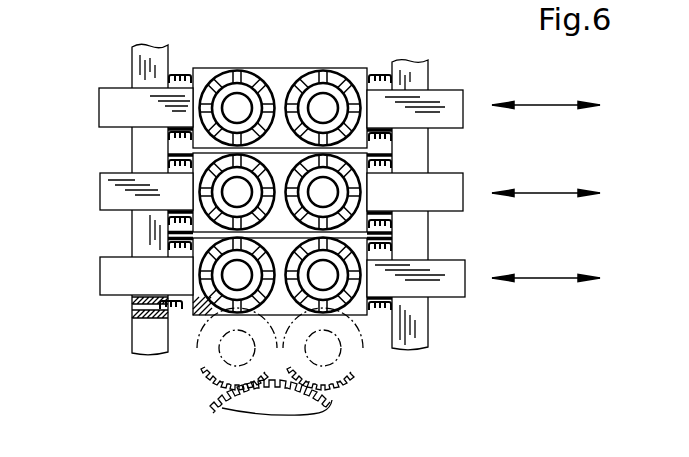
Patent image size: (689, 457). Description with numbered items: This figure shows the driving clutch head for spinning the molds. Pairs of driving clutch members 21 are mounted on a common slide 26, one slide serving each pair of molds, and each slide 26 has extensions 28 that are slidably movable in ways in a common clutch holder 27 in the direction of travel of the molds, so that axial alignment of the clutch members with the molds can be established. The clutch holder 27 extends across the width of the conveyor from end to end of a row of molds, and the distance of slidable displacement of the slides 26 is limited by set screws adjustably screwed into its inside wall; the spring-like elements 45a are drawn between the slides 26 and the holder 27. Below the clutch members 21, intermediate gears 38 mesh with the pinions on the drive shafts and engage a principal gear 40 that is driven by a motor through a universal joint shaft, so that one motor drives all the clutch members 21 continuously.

The driving clutch member 21 is at (297, 85).
The slide 26 is at (300, 72).
The clutch holder 27 is at (417, 167).
The extension 28 is at (455, 95).
The springs 45a is at (383, 163).
The intermediate gear 38 is at (207, 360).
The principal gear 40 is at (227, 405).